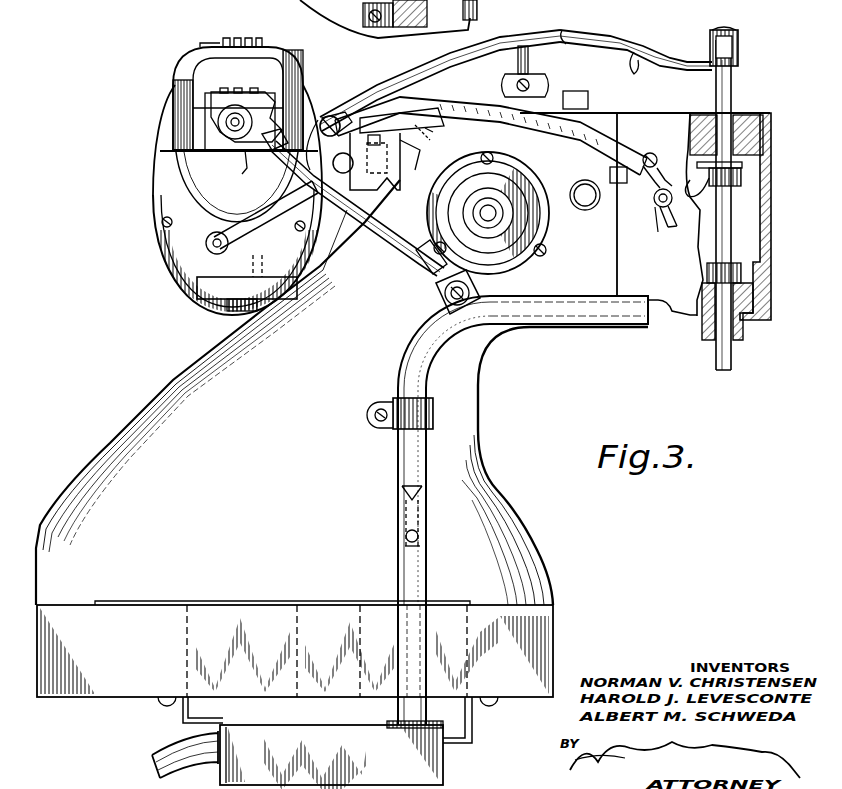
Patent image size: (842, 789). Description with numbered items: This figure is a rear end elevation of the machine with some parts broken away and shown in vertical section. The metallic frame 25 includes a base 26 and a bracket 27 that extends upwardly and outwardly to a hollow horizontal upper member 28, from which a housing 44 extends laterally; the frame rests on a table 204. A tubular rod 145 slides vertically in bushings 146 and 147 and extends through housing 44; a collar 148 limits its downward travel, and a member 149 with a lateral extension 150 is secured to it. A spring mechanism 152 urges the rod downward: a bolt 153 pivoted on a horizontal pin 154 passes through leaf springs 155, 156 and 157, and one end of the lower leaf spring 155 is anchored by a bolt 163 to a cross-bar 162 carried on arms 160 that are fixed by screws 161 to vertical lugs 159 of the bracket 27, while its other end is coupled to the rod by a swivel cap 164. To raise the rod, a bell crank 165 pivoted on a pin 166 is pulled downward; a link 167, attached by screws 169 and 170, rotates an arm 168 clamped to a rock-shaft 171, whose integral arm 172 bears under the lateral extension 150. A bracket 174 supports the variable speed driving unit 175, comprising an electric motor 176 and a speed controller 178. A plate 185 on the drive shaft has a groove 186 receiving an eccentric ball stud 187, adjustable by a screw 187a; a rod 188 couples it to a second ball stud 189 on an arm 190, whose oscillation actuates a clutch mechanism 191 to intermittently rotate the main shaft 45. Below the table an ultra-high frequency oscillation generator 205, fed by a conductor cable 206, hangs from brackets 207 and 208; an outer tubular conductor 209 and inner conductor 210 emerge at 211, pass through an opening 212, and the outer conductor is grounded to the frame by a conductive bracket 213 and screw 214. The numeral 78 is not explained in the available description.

The metallic frame 25 is at (161, 381).
The base 26 is at (127, 467).
The bracket 27 is at (502, 494).
The hollow horizontal upper member 28 is at (590, 115).
The housing 44 is at (774, 114).
The main shaft 45 is at (490, 212).
The link 78 is at (430, 130).
The tubular rod 145 is at (733, 88).
The bushing 146 is at (745, 135).
The bushing 147 is at (748, 330).
The collar 148 is at (742, 274).
The member 149 is at (742, 170).
The lateral extension 150 is at (706, 114).
The spring mechanism 152 is at (656, 33).
The bolt 153 is at (530, 62).
The horizontal pin 154 is at (505, 84).
The leaf spring 155 is at (638, 66).
The leaf spring 156 is at (445, 64).
The leaf spring 157 is at (566, 34).
The vertical lugs 159 is at (418, 148).
The laterally projecting arm 160 is at (386, 146).
The screw 161 is at (382, 131).
The cross-bar 162 is at (426, 138).
The screw or bolt 163 is at (368, 102).
The swivel cap 164 is at (748, 41).
The bell crank 165 is at (260, 222).
The pin 166 is at (372, 170).
The link 167 is at (597, 135).
The arm 168 is at (652, 186).
The screw 169 is at (338, 114).
The screw 170 is at (648, 153).
The rock-shaft 171 is at (660, 210).
The arm 172 is at (712, 196).
The bracket 174 is at (197, 290).
The variable speed driving unit 175 is at (146, 192).
The electric motor 176 is at (158, 256).
The speed controller 178 is at (173, 88).
The plate 185 is at (212, 108).
The groove 186 is at (245, 152).
The ball stud 187 is at (218, 122).
The screw 187a is at (255, 97).
The rod 188 is at (418, 258).
The ball stud 189 is at (444, 294).
The arm 190 is at (490, 265).
The clutch mechanism 191 is at (560, 246).
The table 204 is at (553, 634).
The ultra-high frequency oscillation generator 205 is at (443, 776).
The conductor cable 206 is at (153, 760).
The bracket 207 is at (183, 714).
The bracket 208 is at (473, 733).
The outer tubular conductor 209 is at (402, 492).
The inner conductor 210 is at (420, 516).
The emergence point 211 is at (392, 722).
The opening 212 is at (455, 686).
The electrically conductive bracket 213 is at (405, 400).
The screw 214 is at (370, 415).